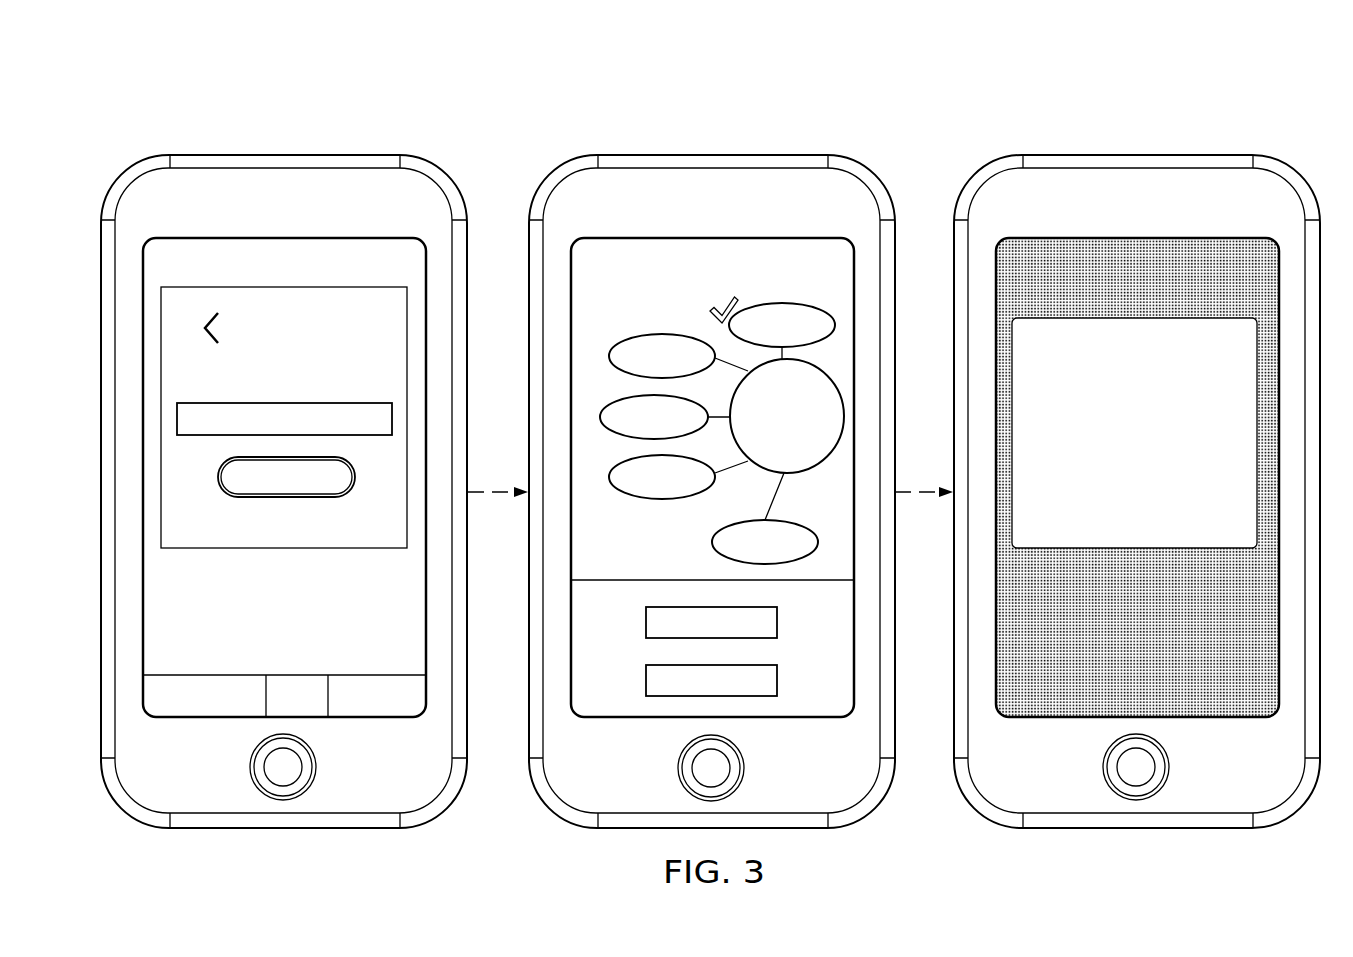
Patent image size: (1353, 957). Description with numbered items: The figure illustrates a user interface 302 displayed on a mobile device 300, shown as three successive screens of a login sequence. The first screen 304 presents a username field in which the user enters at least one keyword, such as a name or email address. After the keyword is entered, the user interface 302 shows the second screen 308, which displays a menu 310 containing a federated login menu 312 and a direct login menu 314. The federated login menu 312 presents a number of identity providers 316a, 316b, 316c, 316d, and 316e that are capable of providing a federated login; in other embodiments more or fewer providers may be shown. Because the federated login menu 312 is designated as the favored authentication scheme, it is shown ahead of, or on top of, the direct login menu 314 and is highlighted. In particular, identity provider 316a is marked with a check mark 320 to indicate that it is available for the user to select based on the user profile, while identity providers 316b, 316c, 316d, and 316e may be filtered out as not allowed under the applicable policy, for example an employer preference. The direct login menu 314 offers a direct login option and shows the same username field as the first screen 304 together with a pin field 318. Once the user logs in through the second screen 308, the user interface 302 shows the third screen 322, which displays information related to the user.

The mobile device 300 is at (1053, 68).
The user interface 302 is at (282, 247).
The first screen 304 is at (249, 133).
The second screen 308 is at (678, 133).
The menu 310 is at (637, 724).
The federated login menu 312 is at (760, 247).
The direct login menu 314 is at (795, 707).
The identity provider 316a is at (782, 303).
The identity provider 316b is at (658, 335).
The identity provider 316c is at (623, 395).
The identity provider 316d is at (660, 500).
The identity provider 316e is at (813, 503).
The pin field 318 is at (777, 680).
The check mark 320 is at (737, 300).
The third screen 322 is at (1203, 724).